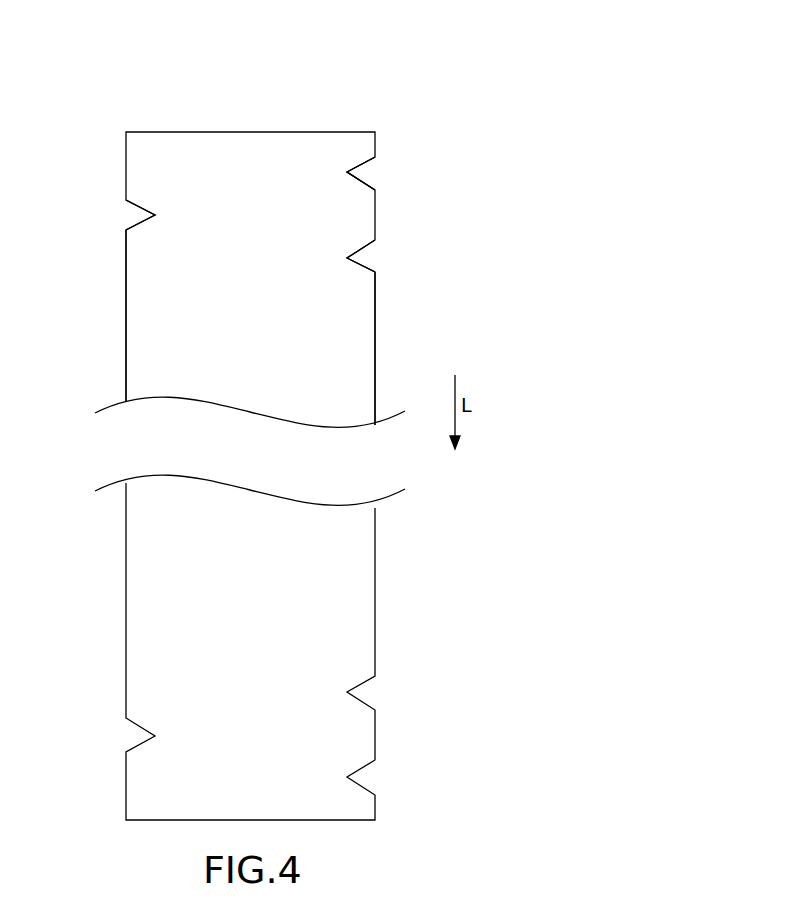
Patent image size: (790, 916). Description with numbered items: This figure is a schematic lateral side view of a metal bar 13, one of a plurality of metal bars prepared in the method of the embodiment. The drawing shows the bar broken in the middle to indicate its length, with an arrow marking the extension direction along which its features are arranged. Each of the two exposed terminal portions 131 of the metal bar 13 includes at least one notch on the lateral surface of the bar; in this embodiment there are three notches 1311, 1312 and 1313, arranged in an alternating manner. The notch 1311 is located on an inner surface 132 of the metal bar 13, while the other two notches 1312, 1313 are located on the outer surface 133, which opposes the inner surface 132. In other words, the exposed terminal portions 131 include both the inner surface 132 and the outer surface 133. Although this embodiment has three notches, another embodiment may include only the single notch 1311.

The metal bar 13 is at (397, 98).
The exposed terminal portion 131 is at (386, 167).
The notch 1311 is at (138, 222).
The notch 1312 is at (362, 178).
The notch 1313 is at (362, 263).
The inner surface 132 is at (126, 332).
The outer surface 133 is at (375, 333).